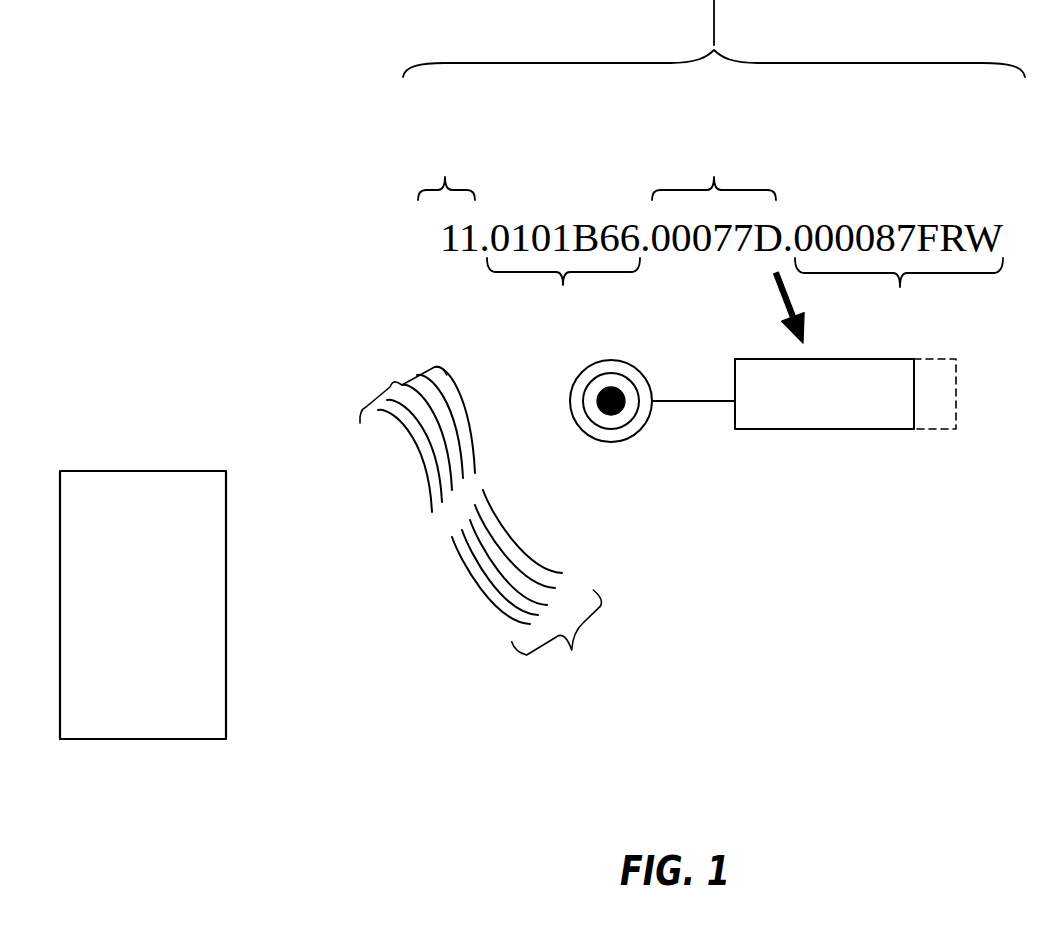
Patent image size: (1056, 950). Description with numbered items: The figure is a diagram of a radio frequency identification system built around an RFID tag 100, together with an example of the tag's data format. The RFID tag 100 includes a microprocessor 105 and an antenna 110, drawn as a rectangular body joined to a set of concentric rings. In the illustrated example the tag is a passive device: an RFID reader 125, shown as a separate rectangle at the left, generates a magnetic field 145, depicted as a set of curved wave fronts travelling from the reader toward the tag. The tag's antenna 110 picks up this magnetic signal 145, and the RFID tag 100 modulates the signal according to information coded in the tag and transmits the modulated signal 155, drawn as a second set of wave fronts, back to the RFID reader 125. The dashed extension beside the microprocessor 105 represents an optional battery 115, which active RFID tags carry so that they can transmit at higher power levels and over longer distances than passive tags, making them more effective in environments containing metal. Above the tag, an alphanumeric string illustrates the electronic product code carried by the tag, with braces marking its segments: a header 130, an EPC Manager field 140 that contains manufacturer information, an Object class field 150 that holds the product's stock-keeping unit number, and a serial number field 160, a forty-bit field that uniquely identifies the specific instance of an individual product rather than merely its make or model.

The RFID tag 100 is at (738, 445).
The microprocessor 105 is at (804, 414).
The antenna 110 is at (583, 413).
The optional battery 115 is at (932, 417).
The RFID reader 125 is at (143, 485).
The header 130 is at (445, 164).
The EPC Manager field 140 is at (563, 293).
The magnetic field 145 is at (395, 381).
The Object class field 150 is at (714, 170).
The modulated signal 155 is at (535, 587).
The serial number field 160 is at (895, 290).